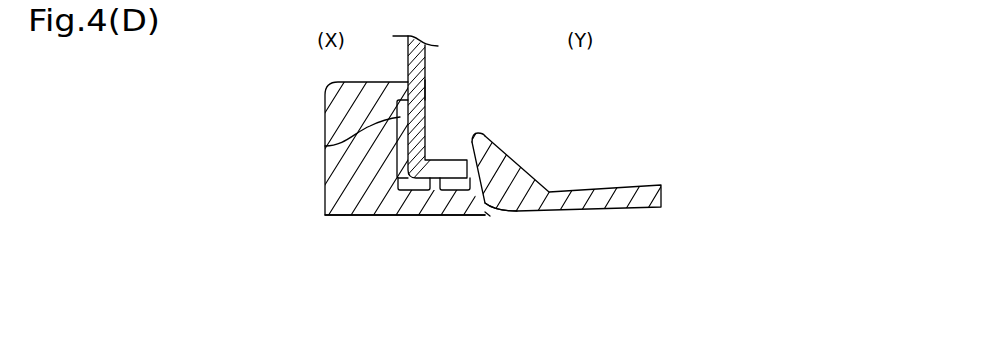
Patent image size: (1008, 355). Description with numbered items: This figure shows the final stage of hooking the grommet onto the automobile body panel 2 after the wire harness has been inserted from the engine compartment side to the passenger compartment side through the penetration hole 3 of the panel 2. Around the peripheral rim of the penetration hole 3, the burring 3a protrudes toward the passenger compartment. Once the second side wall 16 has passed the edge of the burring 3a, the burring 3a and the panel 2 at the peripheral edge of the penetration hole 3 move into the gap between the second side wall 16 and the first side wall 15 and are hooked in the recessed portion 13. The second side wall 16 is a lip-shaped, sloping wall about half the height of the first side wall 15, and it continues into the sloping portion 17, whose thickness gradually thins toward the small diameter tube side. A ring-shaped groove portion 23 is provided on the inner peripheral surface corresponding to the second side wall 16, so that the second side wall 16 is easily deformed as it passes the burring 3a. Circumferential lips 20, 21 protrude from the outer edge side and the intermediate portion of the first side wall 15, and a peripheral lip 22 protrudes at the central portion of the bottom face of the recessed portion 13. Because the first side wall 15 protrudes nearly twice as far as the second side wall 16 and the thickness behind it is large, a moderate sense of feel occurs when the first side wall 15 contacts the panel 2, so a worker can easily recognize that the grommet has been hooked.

The automobile body panel 2 is at (425, 60).
The penetration hole 3 is at (408, 215).
The burring 3a is at (463, 215).
The recessed portion 13 is at (382, 214).
The first side wall 15 is at (325, 146).
The second side wall 16 is at (479, 135).
The sloping portion 17 is at (503, 163).
The circumferential lip 20 is at (425, 90).
The circumferential lip 21 is at (427, 133).
The peripheral lip 22 is at (435, 214).
The ring-shaped groove portion 23 is at (493, 215).